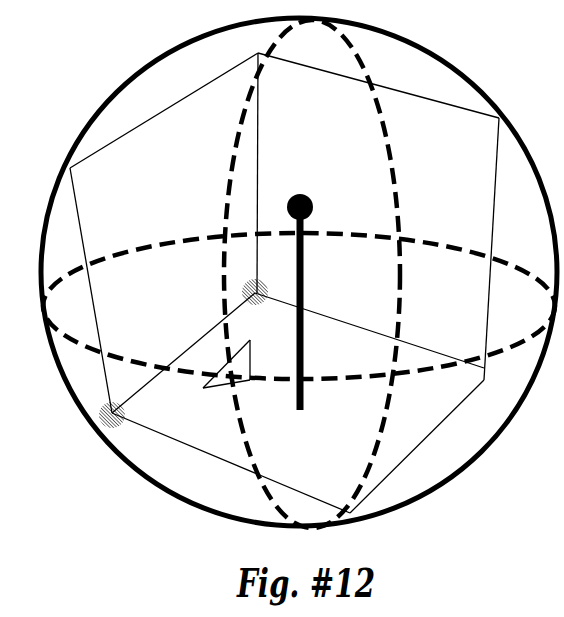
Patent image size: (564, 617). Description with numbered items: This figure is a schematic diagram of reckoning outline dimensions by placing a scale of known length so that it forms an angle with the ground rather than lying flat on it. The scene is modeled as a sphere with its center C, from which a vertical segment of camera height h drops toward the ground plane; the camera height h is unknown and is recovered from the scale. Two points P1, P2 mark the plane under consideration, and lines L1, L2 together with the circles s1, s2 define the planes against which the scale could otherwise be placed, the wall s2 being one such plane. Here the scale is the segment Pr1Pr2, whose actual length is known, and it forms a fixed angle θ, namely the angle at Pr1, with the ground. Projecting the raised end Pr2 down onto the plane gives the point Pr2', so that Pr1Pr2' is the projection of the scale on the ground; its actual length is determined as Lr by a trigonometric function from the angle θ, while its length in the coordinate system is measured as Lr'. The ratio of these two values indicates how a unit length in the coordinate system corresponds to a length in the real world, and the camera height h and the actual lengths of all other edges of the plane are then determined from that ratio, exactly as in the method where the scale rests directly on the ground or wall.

The center of sphere C is at (320, 200).
The camera height h is at (319, 314).
The first point P1 is at (89, 427).
The second point (projection of center) P2 is at (230, 294).
The first line L1 is at (82, 290).
The second line L2 is at (225, 173).
The first great circle (meridian) s1 is at (312, 274).
The wall s2 is at (299, 306).
The scale end point Pr1 is at (214, 400).
The scale end point Pr2 is at (270, 352).
The projection point Pr2' is at (248, 380).